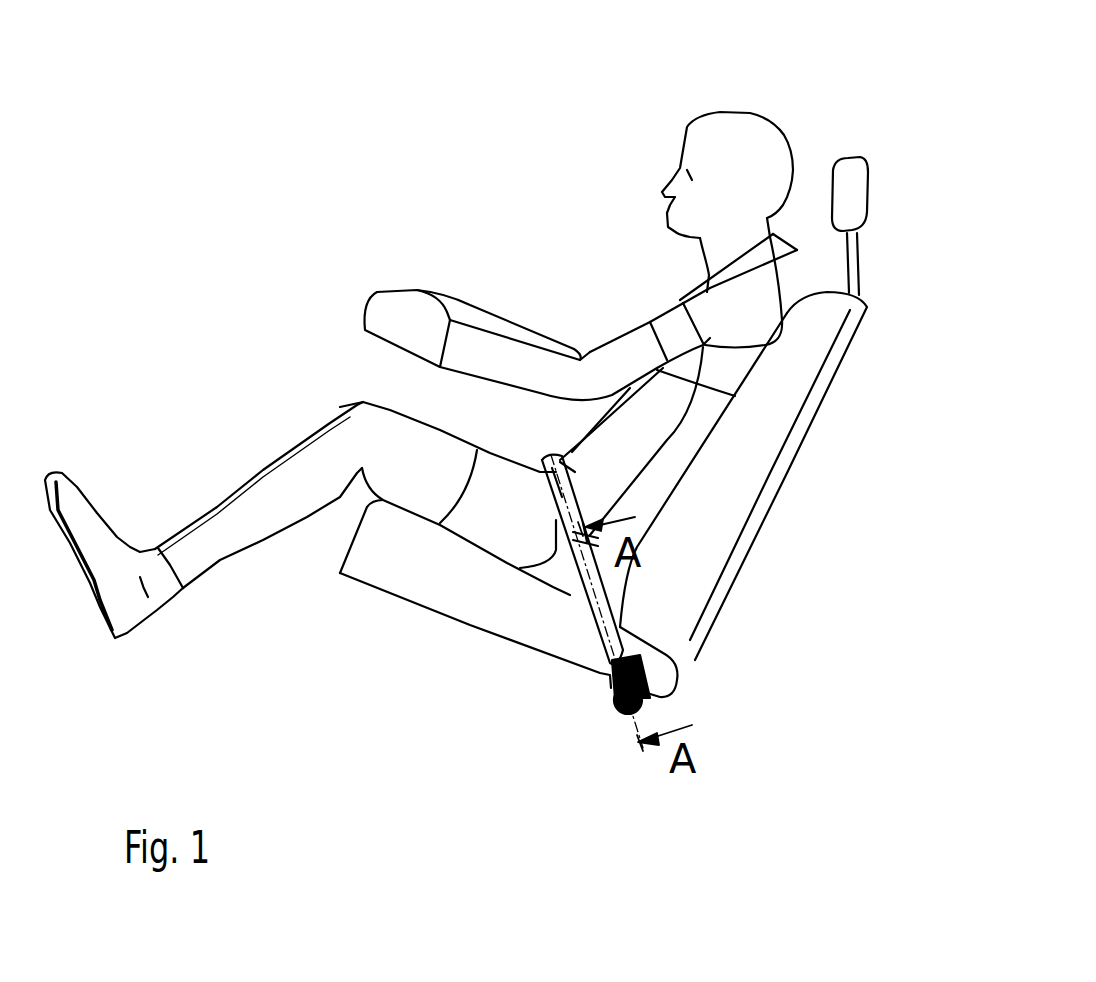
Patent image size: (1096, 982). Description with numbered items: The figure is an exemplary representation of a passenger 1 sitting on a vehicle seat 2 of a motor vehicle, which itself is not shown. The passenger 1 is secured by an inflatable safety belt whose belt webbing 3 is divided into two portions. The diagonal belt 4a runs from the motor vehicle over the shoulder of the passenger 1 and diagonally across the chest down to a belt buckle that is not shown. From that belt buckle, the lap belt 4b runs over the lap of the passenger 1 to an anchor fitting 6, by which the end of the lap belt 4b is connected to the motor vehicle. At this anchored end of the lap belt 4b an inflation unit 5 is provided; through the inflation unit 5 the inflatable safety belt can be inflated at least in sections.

The passenger 1 is at (388, 448).
The vehicle seat 2 is at (495, 598).
The belt webbing 3 is at (557, 462).
The diagonal belt 4a is at (752, 247).
The lap belt 4b is at (562, 516).
The inflation unit 5 is at (603, 660).
The anchor fitting 6 is at (632, 713).